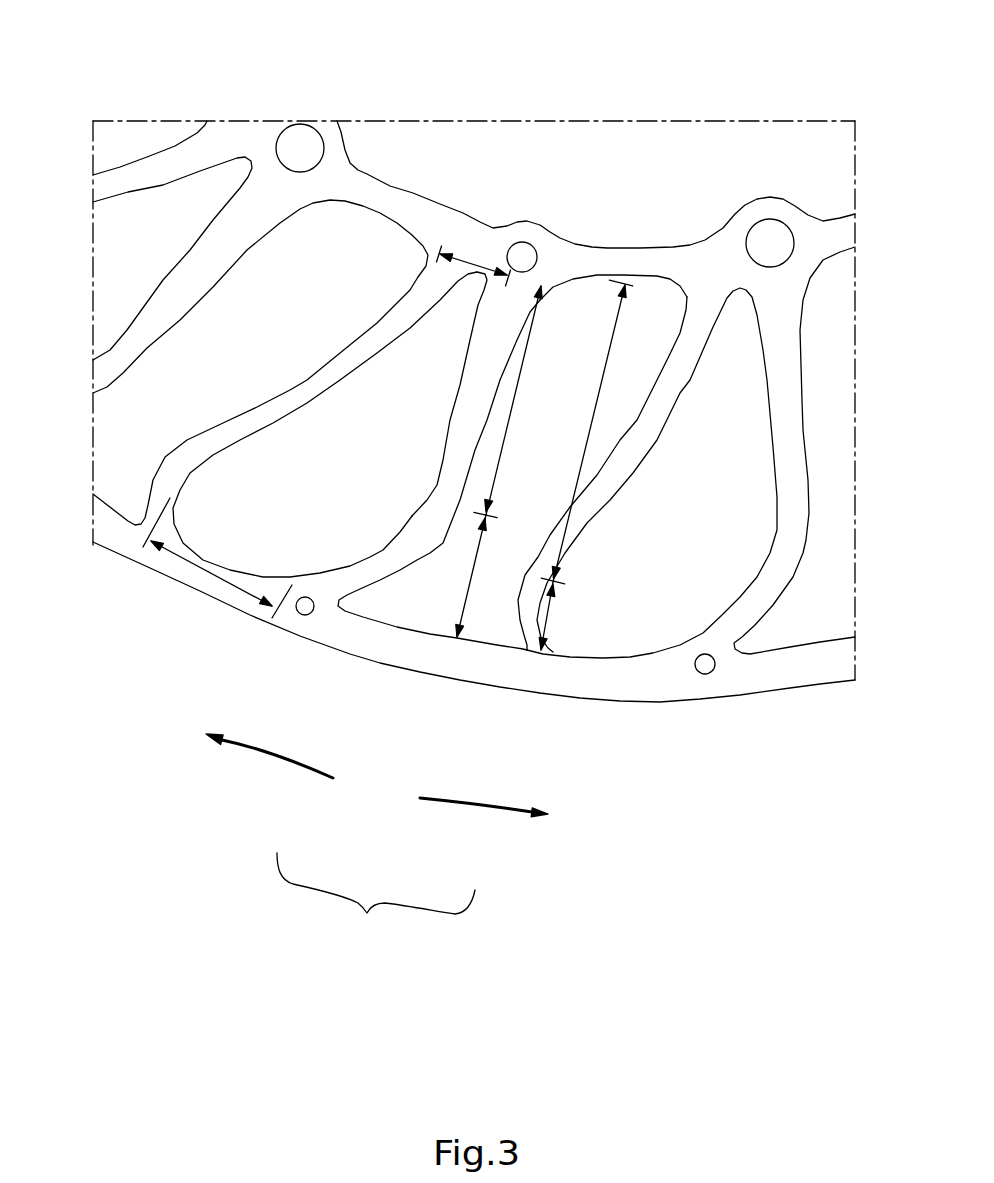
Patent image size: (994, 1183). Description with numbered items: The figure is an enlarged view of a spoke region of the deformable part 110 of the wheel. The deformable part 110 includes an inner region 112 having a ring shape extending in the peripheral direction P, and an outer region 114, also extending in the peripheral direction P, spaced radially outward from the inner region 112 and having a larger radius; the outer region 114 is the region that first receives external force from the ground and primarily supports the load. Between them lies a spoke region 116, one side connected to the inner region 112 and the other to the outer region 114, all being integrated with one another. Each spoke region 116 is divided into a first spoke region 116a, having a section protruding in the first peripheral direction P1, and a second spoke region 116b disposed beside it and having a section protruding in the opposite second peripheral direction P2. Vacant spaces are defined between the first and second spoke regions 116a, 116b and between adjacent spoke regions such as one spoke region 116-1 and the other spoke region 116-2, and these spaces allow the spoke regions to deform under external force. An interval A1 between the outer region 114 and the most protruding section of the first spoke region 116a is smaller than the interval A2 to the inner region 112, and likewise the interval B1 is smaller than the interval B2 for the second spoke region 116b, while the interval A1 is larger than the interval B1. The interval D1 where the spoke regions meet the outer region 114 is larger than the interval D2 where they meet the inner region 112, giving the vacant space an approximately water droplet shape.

The deformable part 110 is at (503, 72).
The inner region 112 is at (390, 213).
The outer region 114 is at (462, 655).
The spoke region 116 is at (500, 620).
The one spoke region 116-1 is at (327, 532).
The other spoke region 116-2 is at (637, 583).
The first spoke region 116a is at (440, 448).
The second spoke region 116b is at (653, 423).
The interval A1 is at (482, 576).
The interval A2 is at (515, 397).
The interval B1 is at (550, 620).
The interval B2 is at (600, 438).
The interval D1 is at (210, 577).
The interval D2 is at (474, 266).
The peripheral direction P is at (376, 901).
The first peripheral direction P1 is at (472, 808).
The second peripheral direction P2 is at (275, 763).